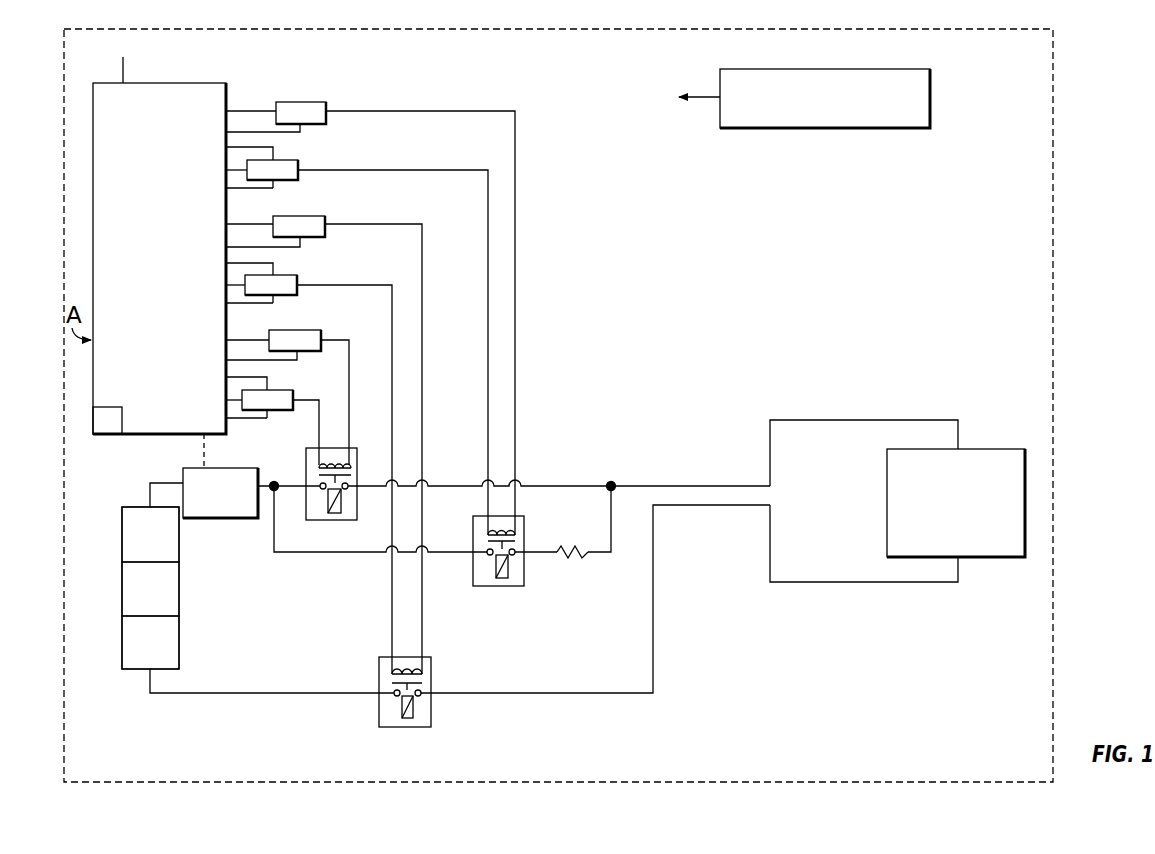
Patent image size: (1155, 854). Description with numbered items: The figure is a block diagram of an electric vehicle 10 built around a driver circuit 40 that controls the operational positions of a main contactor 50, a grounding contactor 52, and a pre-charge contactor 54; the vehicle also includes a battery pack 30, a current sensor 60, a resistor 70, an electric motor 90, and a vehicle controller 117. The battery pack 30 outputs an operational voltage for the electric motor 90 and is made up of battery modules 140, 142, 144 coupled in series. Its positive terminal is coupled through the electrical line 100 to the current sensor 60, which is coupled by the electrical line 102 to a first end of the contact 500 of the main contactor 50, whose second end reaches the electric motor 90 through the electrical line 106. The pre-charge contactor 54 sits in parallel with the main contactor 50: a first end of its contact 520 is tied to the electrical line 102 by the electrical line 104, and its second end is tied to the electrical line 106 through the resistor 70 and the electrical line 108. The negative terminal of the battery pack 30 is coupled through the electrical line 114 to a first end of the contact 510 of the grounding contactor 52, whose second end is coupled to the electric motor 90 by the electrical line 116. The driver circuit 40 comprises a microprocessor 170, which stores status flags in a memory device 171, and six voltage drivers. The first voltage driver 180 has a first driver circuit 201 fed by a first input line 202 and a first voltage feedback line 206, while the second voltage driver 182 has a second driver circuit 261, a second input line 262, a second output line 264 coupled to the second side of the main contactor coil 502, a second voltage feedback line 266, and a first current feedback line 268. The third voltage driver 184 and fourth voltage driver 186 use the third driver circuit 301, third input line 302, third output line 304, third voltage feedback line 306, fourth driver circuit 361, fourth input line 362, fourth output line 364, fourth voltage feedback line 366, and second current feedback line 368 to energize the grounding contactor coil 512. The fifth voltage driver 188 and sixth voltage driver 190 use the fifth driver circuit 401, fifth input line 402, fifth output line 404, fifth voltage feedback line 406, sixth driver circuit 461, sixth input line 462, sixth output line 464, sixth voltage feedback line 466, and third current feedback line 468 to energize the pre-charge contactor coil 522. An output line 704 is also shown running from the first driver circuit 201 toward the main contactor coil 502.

The electric vehicle 10 is at (656, 27).
The battery pack 30 is at (181, 585).
The driver circuit 40 is at (555, 146).
The main contactor 50 is at (352, 448).
The grounding contactor 52 is at (422, 657).
The pre-charge contactor 54 is at (524, 516).
The current sensor 60 is at (222, 468).
The resistor 70 is at (580, 556).
The electric motor 90 is at (985, 448).
The electrical line 100 is at (165, 482).
The electrical line 102 is at (285, 484).
The electrical line 104 is at (313, 552).
The electrical line 106 is at (572, 486).
The electrical line 108 is at (611, 532).
The electrical line 114 is at (240, 694).
The electrical line 116 is at (523, 695).
The vehicle controller 117 is at (930, 92).
The battery module 140 is at (132, 535).
The battery module 142 is at (132, 585).
The battery module 144 is at (132, 640).
The microprocessor 170 is at (175, 83).
The memory device 171 is at (110, 412).
The first voltage driver 180 is at (334, 314).
The second voltage driver 182 is at (308, 387).
The third voltage driver 184 is at (367, 211).
The fourth voltage driver 186 is at (354, 261).
The fifth voltage driver 188 is at (367, 91).
The sixth voltage driver 190 is at (367, 151).
The first driver circuit 201 is at (300, 330).
The first input line 202 is at (253, 340).
The first voltage feedback line 206 is at (242, 358).
The second driver circuit 261 is at (270, 390).
The second input line 262 is at (238, 399).
The second output line 264 is at (319, 423).
The second voltage feedback line 266 is at (241, 376).
The first current feedback line 268 is at (241, 417).
The third driver circuit 301 is at (296, 216).
The third input line 302 is at (252, 224).
The third output line 304 is at (422, 240).
The third voltage feedback line 306 is at (301, 246).
The fourth driver circuit 361 is at (289, 276).
The fourth input line 362 is at (238, 284).
The fourth output line 364 is at (392, 323).
The fourth voltage feedback line 366 is at (241, 262).
The second current feedback line 368 is at (241, 302).
The fifth driver circuit 401 is at (296, 102).
The fifth input line 402 is at (257, 111).
The fifth output line 404 is at (515, 226).
The fifth voltage feedback line 406 is at (241, 131).
The sixth driver circuit 461 is at (290, 160).
The sixth input line 462 is at (238, 169).
The sixth output line 464 is at (488, 270).
The sixth voltage feedback line 466 is at (241, 146).
The third current feedback line 468 is at (241, 187).
The contact 500 is at (346, 475).
The main contactor coil 502 is at (337, 458).
The contact 510 is at (418, 683).
The grounding contactor coil 512 is at (394, 671).
The contact 520 is at (512, 541).
The pre-charge contactor coil 522 is at (490, 534).
The output line 704 is at (349, 372).